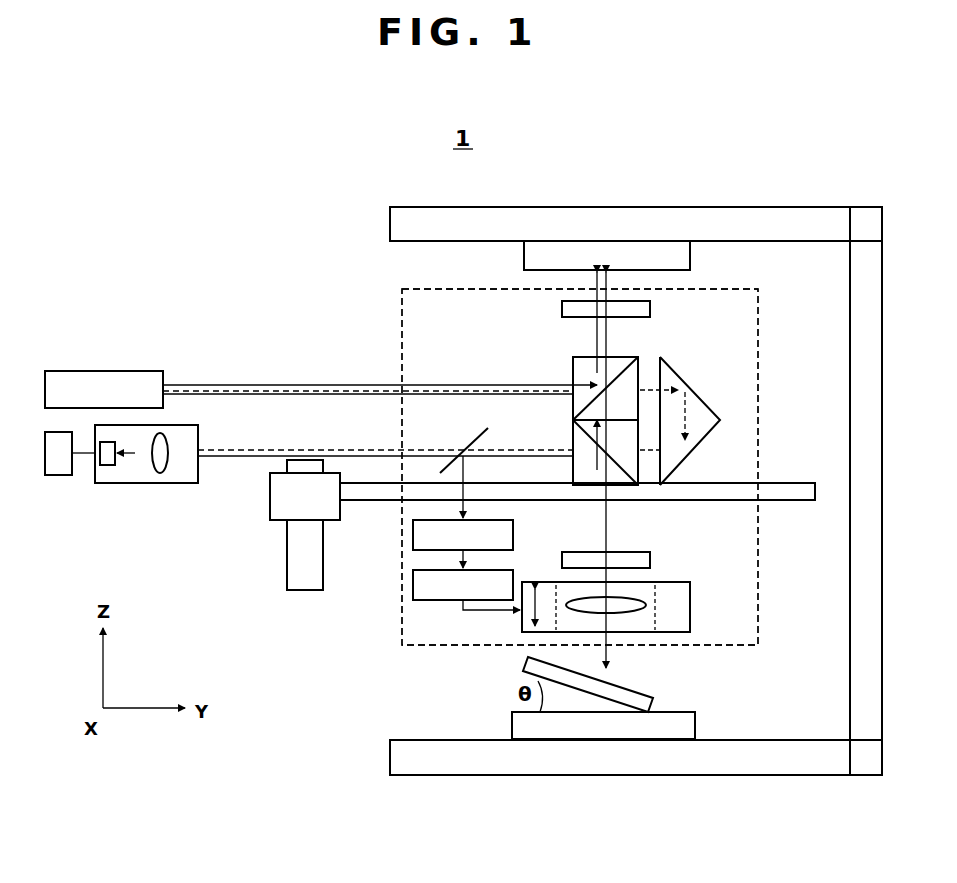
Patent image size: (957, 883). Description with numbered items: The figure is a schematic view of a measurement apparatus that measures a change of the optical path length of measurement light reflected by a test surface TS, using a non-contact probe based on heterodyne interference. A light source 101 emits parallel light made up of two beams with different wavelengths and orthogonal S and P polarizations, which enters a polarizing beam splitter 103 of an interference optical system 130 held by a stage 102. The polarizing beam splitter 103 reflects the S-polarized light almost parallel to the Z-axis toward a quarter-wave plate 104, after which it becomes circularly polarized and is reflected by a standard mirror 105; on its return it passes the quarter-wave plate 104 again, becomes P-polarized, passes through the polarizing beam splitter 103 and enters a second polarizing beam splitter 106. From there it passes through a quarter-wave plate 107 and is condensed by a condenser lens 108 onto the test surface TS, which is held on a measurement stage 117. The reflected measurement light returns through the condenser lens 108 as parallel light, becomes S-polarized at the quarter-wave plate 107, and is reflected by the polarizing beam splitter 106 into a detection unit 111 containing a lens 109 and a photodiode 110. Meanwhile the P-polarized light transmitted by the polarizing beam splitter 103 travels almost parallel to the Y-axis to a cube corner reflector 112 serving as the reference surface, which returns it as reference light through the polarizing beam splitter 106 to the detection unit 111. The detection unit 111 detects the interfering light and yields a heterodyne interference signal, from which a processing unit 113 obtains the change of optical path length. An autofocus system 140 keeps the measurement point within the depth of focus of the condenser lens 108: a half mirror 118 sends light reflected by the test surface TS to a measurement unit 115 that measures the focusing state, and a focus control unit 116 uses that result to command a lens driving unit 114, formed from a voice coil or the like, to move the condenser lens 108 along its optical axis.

The light source 101 is at (84, 371).
The stage 102 is at (732, 470).
The polarizing beam splitter 103 is at (638, 380).
The λ/4 plate 104 is at (562, 309).
The standard mirror 105 is at (526, 258).
The polarizing beam splitter 106 is at (622, 437).
The λ/4 plate 107 is at (650, 559).
The condenser lens 108 is at (640, 601).
The lens 109 is at (160, 473).
The photodiode 110 is at (110, 466).
The detection unit 111 is at (198, 429).
The cube corner reflector 112 is at (688, 414).
The processing unit 113 is at (58, 477).
The lens driving unit 114 is at (536, 592).
The measurement unit 115 is at (415, 540).
The focus control unit 116 is at (415, 592).
The measurement stage 117 is at (694, 726).
The half mirror 118 is at (475, 442).
The interference optical system 130 is at (760, 296).
The autofocus system 140 is at (410, 630).
The test surface TS is at (644, 691).